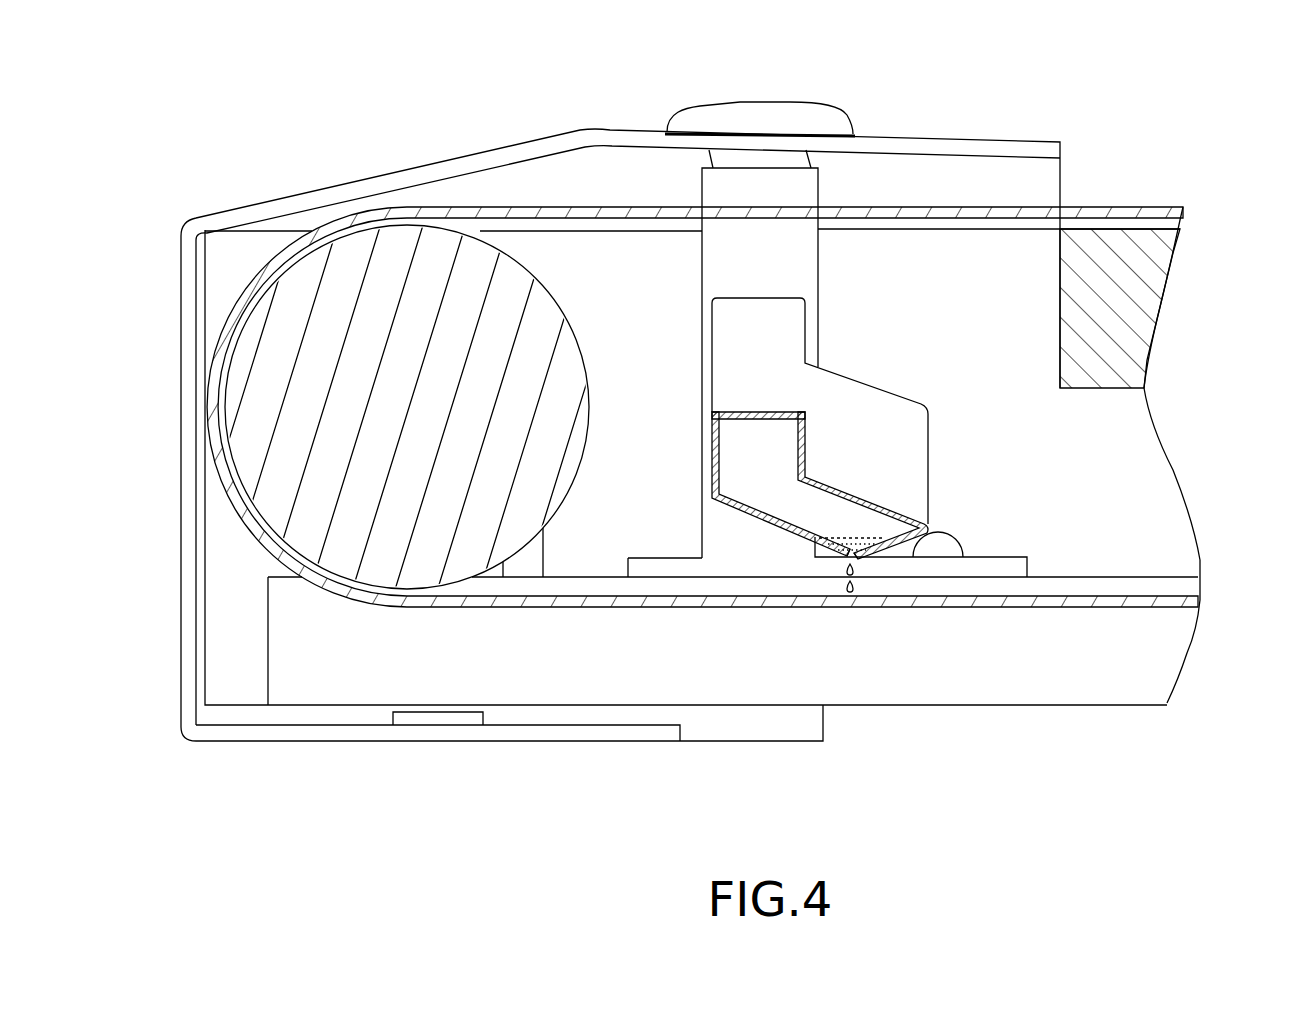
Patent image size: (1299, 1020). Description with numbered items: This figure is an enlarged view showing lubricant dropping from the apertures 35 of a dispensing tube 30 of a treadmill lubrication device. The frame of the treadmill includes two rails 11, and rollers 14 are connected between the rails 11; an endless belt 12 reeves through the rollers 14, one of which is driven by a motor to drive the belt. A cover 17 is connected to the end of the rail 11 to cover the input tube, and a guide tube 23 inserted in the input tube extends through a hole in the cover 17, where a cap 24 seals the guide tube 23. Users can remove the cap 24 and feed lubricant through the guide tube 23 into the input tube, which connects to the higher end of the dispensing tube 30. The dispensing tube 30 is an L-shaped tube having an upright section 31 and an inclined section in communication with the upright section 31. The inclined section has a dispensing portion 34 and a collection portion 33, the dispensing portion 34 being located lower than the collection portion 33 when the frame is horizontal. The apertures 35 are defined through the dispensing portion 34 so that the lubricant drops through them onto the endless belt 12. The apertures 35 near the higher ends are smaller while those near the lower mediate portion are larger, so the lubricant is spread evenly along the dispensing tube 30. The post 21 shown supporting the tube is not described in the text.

The rail 11 is at (1123, 667).
The endless belt 12 is at (1097, 213).
The roller 14 is at (285, 335).
The cover 17 is at (300, 190).
The support post 21 is at (723, 530).
The guide tube 23 is at (805, 160).
The cap 24 is at (740, 118).
The dispensing tube 30 is at (890, 472).
The upright section 31 is at (763, 447).
The collection portion 33 is at (920, 527).
The dispensing portion 34 is at (857, 547).
The aperture 35 is at (855, 515).